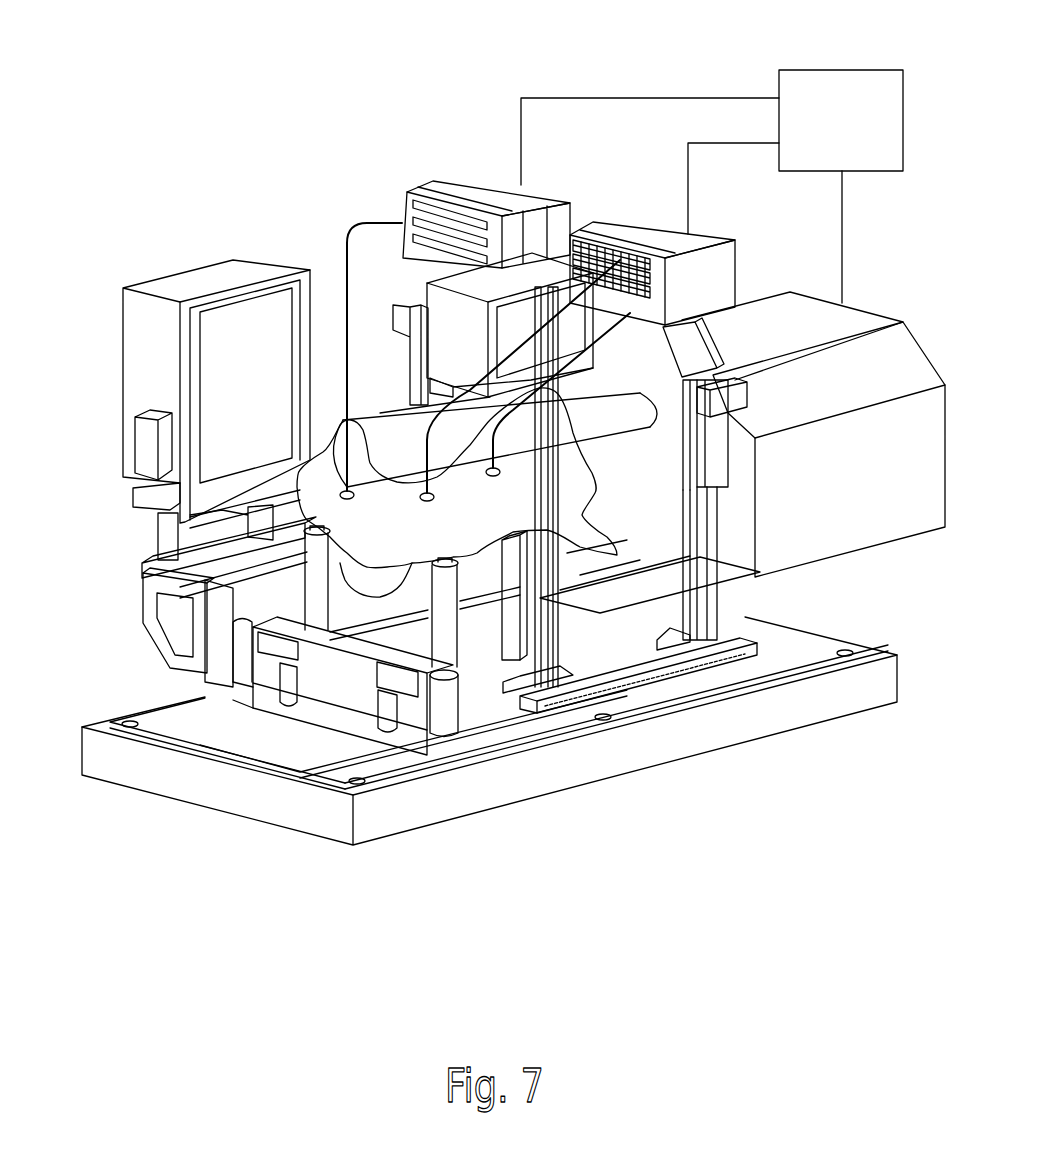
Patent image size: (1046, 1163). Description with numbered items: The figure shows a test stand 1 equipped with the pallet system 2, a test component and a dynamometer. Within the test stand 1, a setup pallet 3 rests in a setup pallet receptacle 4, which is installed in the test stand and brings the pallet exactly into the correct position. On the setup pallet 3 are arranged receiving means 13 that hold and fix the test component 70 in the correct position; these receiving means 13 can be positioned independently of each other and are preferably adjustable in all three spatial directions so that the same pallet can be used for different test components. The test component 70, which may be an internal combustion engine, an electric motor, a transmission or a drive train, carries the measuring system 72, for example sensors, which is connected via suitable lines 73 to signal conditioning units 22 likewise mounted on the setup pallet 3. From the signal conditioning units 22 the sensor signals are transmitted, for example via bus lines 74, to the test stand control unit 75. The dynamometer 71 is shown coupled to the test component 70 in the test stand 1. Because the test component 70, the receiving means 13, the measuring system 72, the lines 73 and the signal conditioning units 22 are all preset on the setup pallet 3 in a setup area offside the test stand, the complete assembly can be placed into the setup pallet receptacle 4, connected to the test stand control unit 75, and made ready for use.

The test stand 1 is at (715, 805).
The pallet system 2 is at (143, 652).
The setup pallet 3 is at (720, 667).
The setup pallet receptacle 4 is at (138, 610).
The receiving means 13 is at (445, 617).
The signal conditioning unit 22 is at (475, 180).
The test component 70 is at (495, 528).
The drive motor 71 is at (863, 498).
The measuring system 72 is at (423, 500).
The lines 73 is at (375, 223).
The bus lines 74 is at (727, 93).
The test stand control unit 75 is at (863, 130).